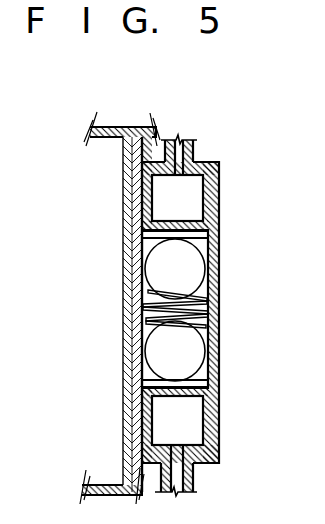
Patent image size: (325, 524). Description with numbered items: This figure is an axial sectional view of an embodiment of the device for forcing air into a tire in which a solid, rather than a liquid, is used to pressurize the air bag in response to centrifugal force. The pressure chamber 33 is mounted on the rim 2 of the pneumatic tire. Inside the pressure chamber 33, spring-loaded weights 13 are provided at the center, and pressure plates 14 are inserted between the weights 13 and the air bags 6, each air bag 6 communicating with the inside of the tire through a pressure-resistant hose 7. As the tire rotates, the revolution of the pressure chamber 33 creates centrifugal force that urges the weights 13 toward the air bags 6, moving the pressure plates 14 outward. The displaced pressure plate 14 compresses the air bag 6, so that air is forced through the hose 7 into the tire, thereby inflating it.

The rim 2 is at (125, 253).
The air bag 6 is at (167, 221).
The pressure-resistant hose 7 is at (194, 153).
The weights 13 is at (204, 285).
The pressure plate 14 is at (218, 252).
The pressure chamber 33 is at (218, 334).